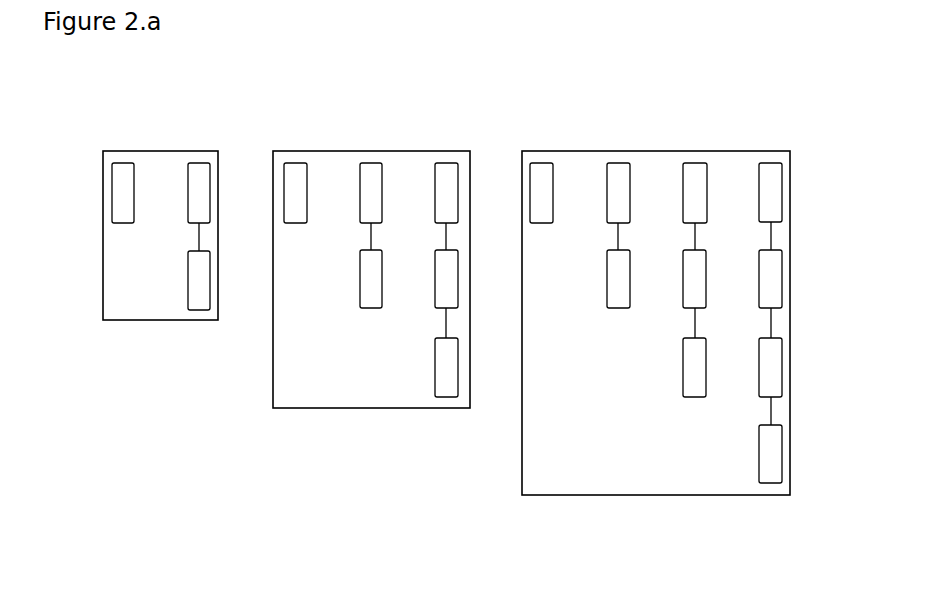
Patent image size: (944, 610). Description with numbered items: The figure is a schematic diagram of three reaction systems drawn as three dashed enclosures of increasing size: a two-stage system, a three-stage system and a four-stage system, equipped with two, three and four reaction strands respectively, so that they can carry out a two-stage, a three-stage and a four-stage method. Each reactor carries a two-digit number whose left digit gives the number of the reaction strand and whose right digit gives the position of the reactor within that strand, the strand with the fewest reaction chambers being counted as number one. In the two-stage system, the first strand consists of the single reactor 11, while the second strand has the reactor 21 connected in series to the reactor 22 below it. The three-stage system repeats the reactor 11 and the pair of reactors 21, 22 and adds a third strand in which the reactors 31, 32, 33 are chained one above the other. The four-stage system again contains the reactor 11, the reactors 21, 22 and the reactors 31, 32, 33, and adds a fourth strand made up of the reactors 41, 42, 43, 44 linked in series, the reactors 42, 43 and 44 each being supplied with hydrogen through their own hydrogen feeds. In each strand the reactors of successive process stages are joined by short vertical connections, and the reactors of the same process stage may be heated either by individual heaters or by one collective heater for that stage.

The reactor 11 is at (112, 193).
The reactor 21 is at (188, 190).
The reactor 22 is at (187, 280).
The reactor 31 is at (437, 188).
The reactor 32 is at (435, 287).
The reactor 33 is at (435, 373).
The reactor 41 is at (782, 192).
The reactor 42 is at (782, 280).
The reactor 43 is at (782, 367).
The reactor 44 is at (782, 455).